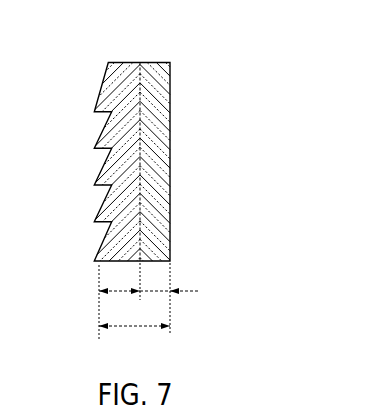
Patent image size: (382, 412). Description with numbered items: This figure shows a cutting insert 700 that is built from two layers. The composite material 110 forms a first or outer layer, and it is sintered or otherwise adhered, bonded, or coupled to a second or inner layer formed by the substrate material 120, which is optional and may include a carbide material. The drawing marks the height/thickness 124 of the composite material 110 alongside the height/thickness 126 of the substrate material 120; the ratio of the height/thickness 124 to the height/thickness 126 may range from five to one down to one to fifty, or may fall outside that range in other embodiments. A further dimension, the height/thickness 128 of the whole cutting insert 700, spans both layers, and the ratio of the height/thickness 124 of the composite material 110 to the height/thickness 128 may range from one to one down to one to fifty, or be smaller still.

The cutting insert 700 is at (214, 32).
The composite material 110 is at (142, 40).
The substrate material 120 is at (170, 40).
The height/thickness of the composite material 124 is at (115, 290).
The height/thickness of the substrate material 126 is at (157, 291).
The height/thickness of the cutting insert 128 is at (132, 327).